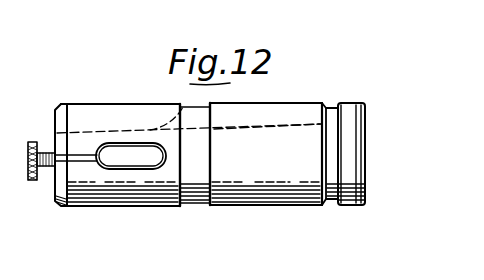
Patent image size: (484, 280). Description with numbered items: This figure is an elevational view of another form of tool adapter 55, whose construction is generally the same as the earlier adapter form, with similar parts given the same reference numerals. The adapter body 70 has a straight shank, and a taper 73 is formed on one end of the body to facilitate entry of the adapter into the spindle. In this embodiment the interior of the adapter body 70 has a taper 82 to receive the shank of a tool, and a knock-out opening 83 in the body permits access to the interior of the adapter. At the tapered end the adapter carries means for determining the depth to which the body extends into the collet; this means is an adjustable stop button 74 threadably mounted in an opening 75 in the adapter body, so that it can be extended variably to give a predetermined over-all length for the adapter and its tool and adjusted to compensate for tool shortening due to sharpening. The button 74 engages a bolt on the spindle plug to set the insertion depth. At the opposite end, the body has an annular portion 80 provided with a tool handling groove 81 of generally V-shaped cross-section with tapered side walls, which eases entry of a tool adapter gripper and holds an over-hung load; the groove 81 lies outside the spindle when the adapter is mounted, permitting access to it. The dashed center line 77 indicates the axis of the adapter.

The tool adapter 55 is at (313, 102).
The adapter body 70 is at (122, 206).
The taper 73 is at (59, 210).
The adjustable stop button 74 is at (27, 181).
The opening 75 is at (52, 152).
The axial center line 77 is at (103, 122).
The annular portion 80 is at (314, 206).
The tool handling groove 81 is at (336, 206).
The taper 82 is at (261, 129).
The knock-out opening 83 is at (153, 168).